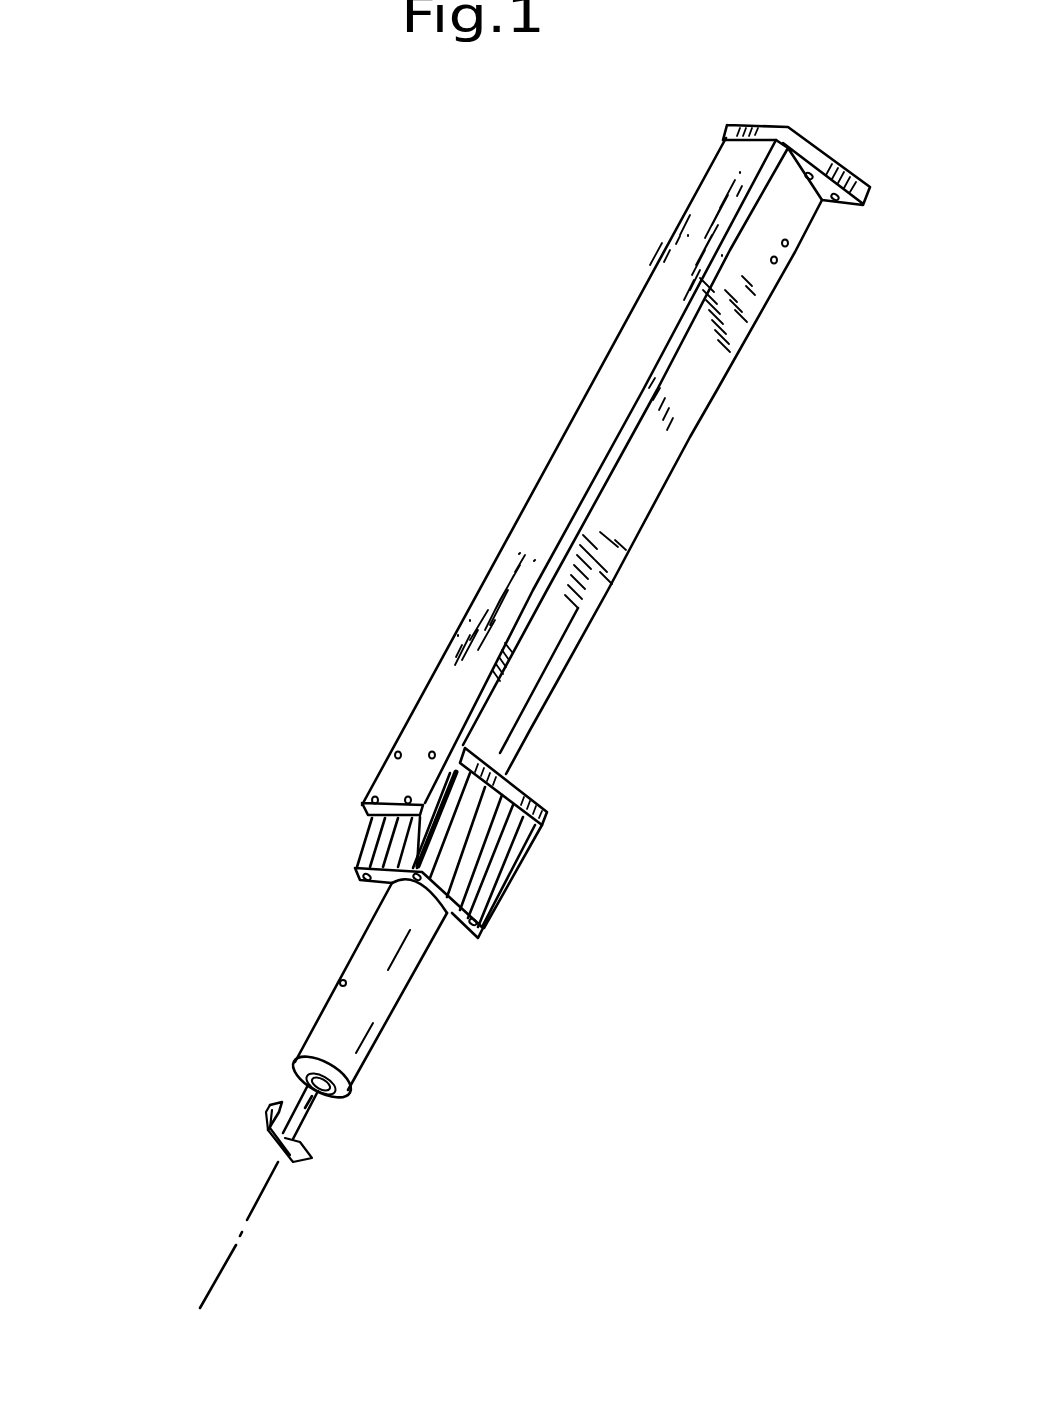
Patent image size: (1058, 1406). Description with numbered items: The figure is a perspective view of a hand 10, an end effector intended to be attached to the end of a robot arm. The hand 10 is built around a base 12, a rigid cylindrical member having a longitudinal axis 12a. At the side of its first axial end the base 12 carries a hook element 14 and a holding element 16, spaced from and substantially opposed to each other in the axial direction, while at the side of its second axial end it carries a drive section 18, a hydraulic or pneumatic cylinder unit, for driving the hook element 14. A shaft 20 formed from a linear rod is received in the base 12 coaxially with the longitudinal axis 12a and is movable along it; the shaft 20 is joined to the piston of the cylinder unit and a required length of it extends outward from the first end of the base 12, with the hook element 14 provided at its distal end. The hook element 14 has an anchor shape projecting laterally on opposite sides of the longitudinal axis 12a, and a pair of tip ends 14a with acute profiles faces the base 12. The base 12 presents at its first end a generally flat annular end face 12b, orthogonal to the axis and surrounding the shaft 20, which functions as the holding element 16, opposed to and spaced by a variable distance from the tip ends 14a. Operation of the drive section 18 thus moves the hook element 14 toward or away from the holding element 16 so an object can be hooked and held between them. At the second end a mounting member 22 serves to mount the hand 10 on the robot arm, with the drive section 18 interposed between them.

The hand 10 is at (418, 368).
The mounting member 22 is at (657, 312).
The drive section 18 is at (495, 850).
The base 12 is at (343, 1010).
The longitudinal axis 12a is at (217, 1273).
The annular end face 12b is at (292, 1068).
The holding element 16 is at (300, 1098).
The shaft 20 is at (288, 1093).
The hook element 14 is at (300, 1162).
The tip ends 14a is at (273, 1103).